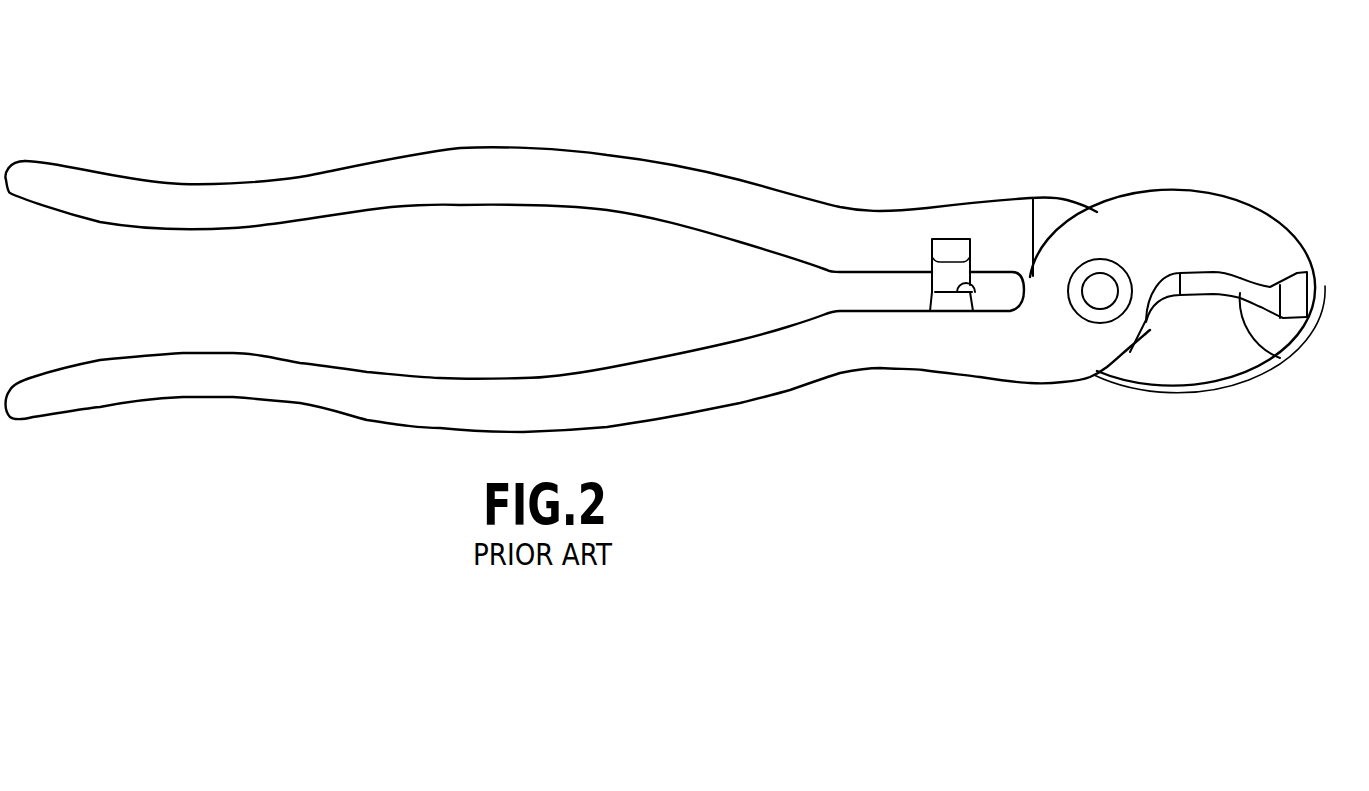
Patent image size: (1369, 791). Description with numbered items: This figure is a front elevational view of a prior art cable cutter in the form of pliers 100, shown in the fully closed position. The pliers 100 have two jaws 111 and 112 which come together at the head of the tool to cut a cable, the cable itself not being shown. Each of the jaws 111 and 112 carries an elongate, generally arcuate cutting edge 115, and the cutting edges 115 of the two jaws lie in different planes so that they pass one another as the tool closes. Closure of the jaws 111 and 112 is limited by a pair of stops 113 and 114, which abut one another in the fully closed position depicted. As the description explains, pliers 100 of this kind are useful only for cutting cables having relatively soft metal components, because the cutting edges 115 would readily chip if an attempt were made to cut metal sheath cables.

The pliers 100 is at (712, 70).
The jaw 111 is at (1216, 197).
The jaw 112 is at (1208, 367).
The stop 113 is at (975, 292).
The stop 114 is at (943, 290).
The cutting edges 115 is at (1273, 357).